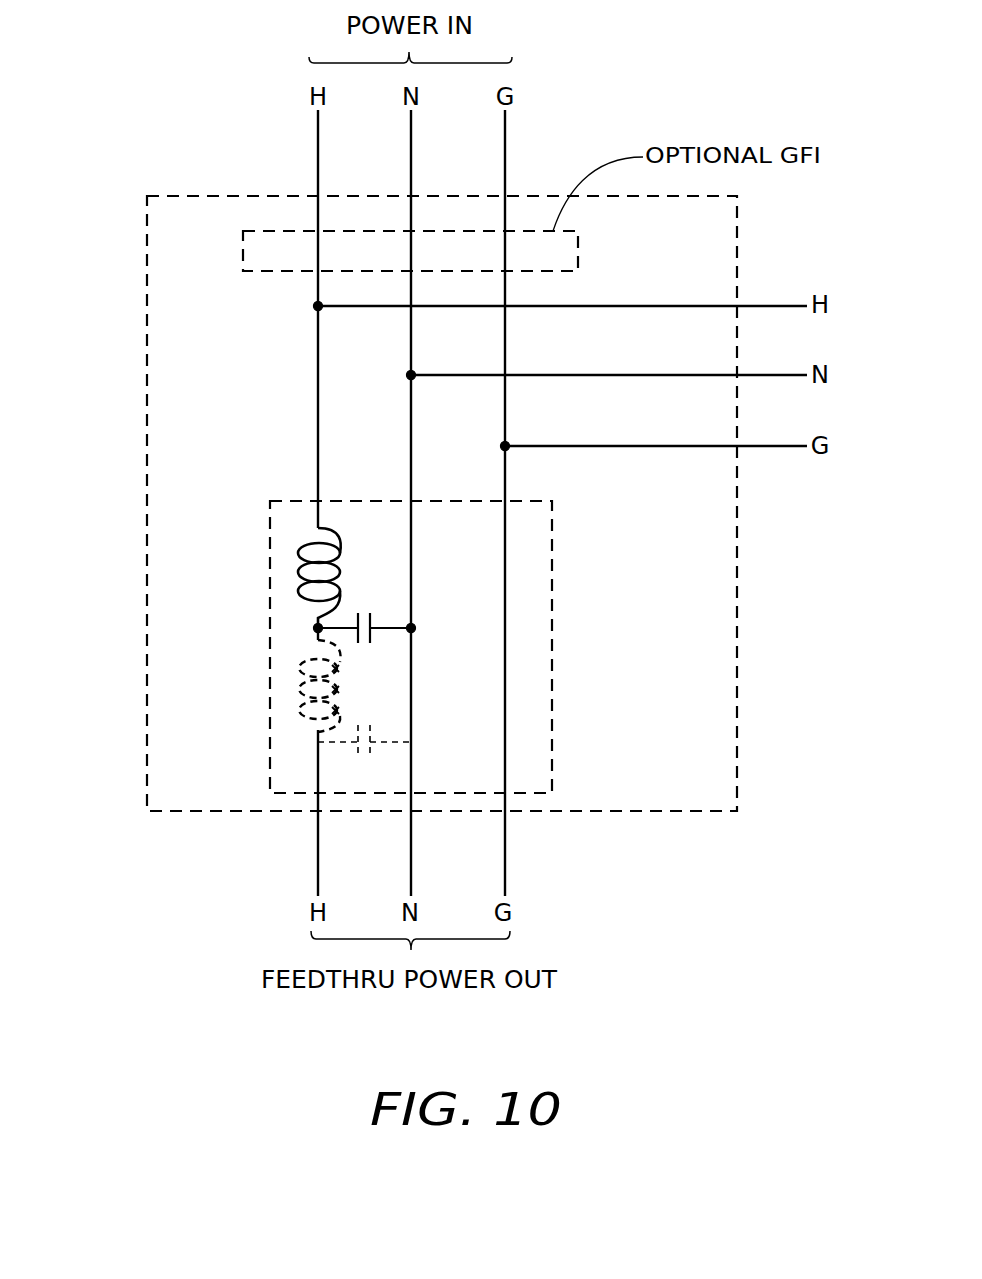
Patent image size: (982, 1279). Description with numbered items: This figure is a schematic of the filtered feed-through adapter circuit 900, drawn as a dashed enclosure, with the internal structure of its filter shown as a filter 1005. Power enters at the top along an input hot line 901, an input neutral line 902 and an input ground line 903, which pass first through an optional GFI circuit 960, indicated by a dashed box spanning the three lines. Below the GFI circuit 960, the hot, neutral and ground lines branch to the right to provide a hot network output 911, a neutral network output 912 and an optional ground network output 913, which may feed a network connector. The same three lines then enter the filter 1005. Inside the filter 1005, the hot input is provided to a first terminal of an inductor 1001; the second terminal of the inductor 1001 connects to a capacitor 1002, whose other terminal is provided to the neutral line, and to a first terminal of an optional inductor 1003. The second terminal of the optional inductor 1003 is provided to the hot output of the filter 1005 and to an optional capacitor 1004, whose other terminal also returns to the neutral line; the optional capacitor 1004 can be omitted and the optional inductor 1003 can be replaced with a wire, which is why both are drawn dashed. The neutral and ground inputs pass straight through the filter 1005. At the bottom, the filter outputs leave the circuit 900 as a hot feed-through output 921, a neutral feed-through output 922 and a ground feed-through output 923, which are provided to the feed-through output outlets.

The filtered feed-through adapter circuit 900 is at (147, 252).
The GFI circuit 960 is at (578, 247).
The input hot line 901 is at (318, 158).
The input neutral line 902 is at (411, 175).
The input ground line 903 is at (505, 176).
The hot network output 911 is at (760, 305).
The neutral network output 912 is at (768, 375).
The ground network output 913 is at (768, 446).
The filter 1005 is at (305, 500).
The inductor 1001 is at (300, 553).
The capacitor 1002 is at (372, 617).
The optional inductor 1003 is at (302, 690).
The optional capacitor 1004 is at (372, 728).
The hot feed-through output 921 is at (318, 833).
The neutral feed-through output 922 is at (411, 850).
The ground feed-through output 923 is at (505, 858).